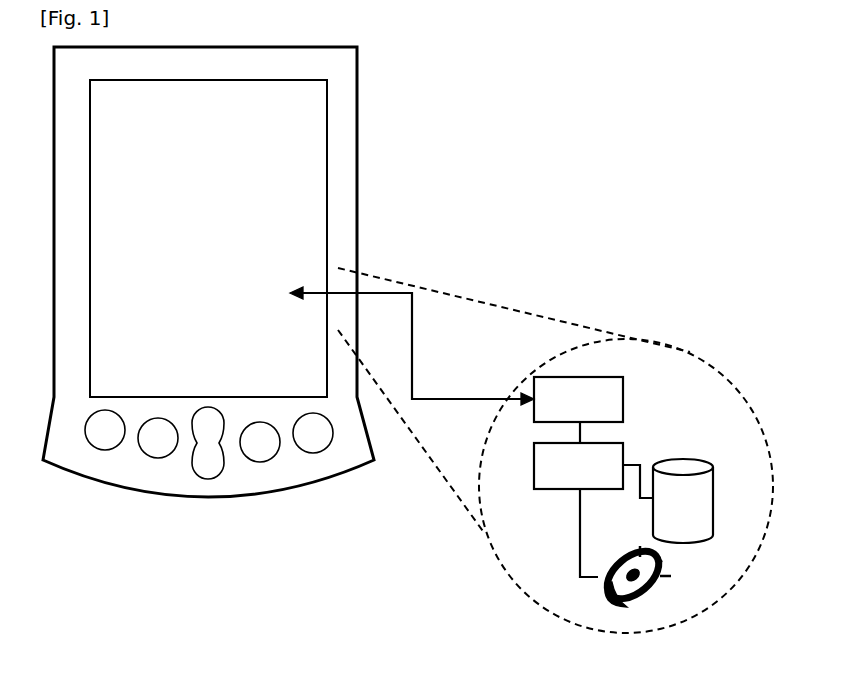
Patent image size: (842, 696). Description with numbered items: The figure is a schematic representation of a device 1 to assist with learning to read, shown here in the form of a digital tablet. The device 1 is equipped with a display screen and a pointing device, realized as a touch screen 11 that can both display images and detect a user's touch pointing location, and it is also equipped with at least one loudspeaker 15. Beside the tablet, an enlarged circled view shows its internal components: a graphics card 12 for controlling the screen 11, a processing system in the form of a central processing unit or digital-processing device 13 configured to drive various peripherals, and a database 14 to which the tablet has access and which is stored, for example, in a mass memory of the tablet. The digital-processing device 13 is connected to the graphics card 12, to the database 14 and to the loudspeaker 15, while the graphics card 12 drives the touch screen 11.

The device 1 is at (358, 80).
The touch screen 11 is at (300, 255).
The graphics card 12 is at (595, 406).
The digital-processing device 13 is at (595, 472).
The database 14 is at (698, 502).
The loudspeaker 15 is at (626, 617).